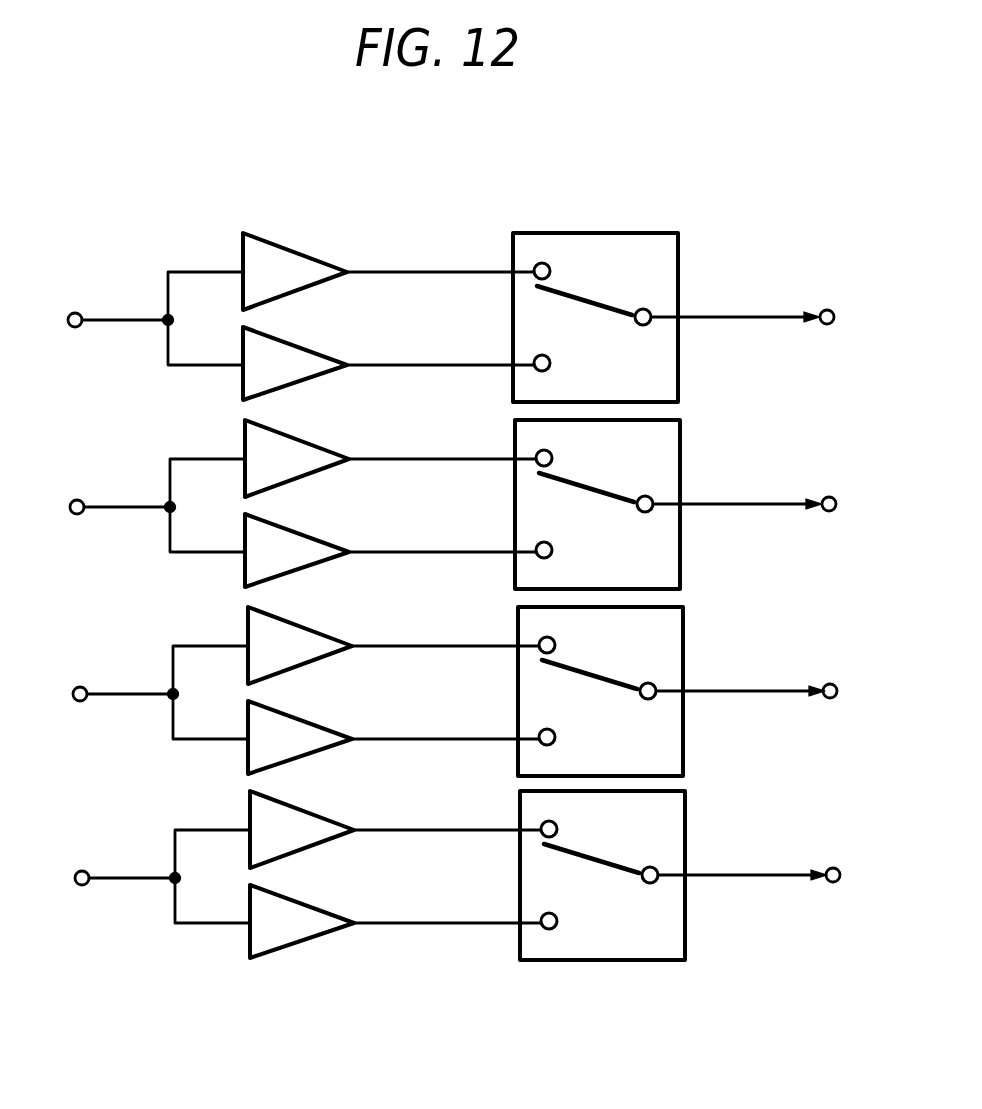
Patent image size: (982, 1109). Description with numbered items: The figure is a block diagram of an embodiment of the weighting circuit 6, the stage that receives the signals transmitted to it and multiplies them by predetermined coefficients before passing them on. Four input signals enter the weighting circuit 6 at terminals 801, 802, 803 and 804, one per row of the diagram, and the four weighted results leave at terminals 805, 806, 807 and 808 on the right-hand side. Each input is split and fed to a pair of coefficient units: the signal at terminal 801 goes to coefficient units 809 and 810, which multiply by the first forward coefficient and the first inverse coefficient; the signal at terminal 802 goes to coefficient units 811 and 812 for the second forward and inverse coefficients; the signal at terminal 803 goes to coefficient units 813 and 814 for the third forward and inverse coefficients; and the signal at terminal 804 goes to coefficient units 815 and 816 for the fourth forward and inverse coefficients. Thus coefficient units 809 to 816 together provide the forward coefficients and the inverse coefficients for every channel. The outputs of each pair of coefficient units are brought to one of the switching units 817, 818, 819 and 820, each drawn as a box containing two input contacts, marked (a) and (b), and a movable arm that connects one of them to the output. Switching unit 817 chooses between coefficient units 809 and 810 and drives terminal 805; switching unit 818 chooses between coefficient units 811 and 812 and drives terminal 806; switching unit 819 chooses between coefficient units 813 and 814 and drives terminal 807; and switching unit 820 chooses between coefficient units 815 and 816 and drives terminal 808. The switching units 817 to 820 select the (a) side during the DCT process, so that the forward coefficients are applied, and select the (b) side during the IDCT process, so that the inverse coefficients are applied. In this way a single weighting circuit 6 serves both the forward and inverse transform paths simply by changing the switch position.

The weighting circuit 6 is at (505, 164).
The terminal 801 is at (73, 312).
The terminal 802 is at (138, 493).
The terminal 803 is at (145, 686).
The terminal 804 is at (148, 869).
The terminal 805 is at (829, 311).
The terminal 806 is at (764, 477).
The terminal 807 is at (765, 662).
The terminal 808 is at (766, 846).
The coefficient unit 809 is at (321, 257).
The coefficient unit 810 is at (321, 353).
The coefficient unit 811 is at (309, 444).
The coefficient unit 812 is at (309, 534).
The coefficient unit 813 is at (312, 630).
The coefficient unit 814 is at (312, 722).
The coefficient unit 815 is at (314, 815).
The coefficient unit 816 is at (314, 906).
The switching unit 817 is at (682, 250).
The switching unit 818 is at (638, 495).
The switching unit 819 is at (638, 688).
The switching unit 820 is at (640, 874).